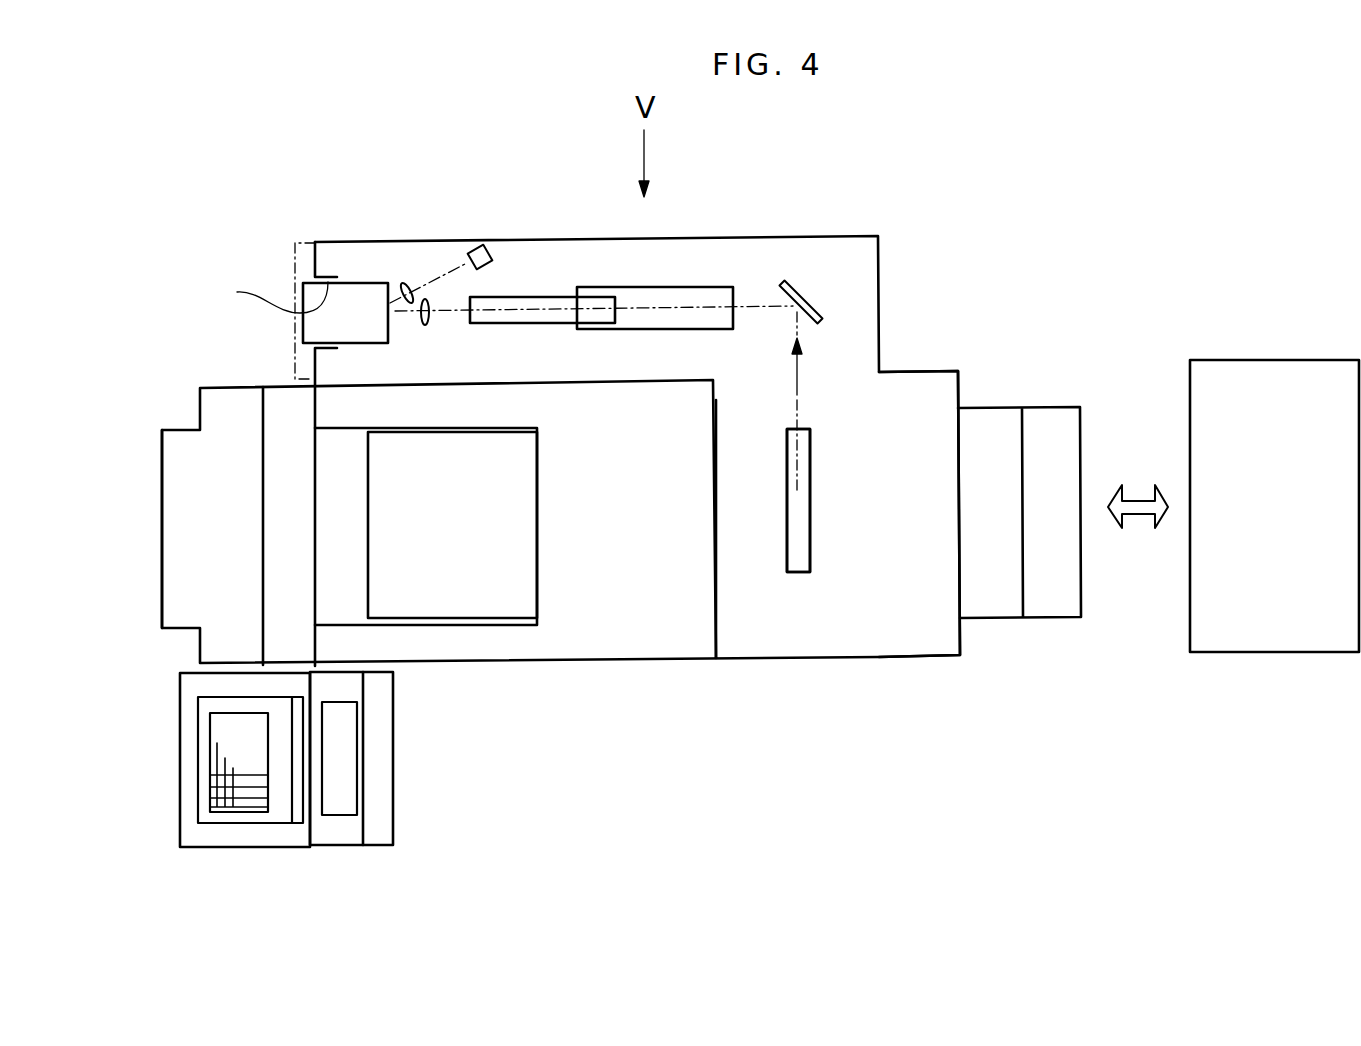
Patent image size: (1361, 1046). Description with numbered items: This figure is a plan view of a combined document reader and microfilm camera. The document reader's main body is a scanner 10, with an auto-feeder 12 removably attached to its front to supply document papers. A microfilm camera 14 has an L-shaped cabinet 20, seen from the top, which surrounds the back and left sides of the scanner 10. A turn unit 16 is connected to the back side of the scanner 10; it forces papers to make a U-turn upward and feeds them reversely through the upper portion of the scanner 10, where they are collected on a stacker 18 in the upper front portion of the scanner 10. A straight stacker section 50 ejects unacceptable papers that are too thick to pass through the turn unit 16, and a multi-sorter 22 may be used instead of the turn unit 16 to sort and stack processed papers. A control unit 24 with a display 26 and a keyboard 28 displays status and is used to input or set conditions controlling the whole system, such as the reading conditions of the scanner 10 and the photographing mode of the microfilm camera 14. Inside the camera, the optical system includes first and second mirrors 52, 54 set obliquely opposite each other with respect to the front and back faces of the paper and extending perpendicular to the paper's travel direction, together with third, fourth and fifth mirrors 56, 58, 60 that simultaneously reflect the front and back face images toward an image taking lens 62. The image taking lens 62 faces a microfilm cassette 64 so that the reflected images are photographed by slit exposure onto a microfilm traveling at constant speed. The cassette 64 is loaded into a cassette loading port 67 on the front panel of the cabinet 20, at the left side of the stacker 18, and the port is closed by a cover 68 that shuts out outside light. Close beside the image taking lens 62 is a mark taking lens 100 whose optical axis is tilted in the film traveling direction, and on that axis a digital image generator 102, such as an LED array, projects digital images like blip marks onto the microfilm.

The scanner 10 is at (620, 661).
The auto-feeder 12 is at (199, 397).
The microfilm camera 14 is at (820, 661).
The turn unit 16 is at (927, 658).
The stacker 18 is at (476, 590).
The cabinet 20 is at (879, 248).
The multi-sorter 22 is at (1263, 652).
The control unit 24 is at (395, 810).
The display 26 is at (350, 845).
The keyboard 28 is at (287, 847).
The straight stacker section 50 is at (1003, 618).
The first mirror 52 is at (785, 568).
The second mirror 54 is at (798, 500).
The third mirror 56 is at (817, 307).
The fourth mirror 58 is at (713, 285).
The fifth mirror 60 is at (544, 296).
The image taking lens 62 is at (430, 322).
The microfilm cassette 64 is at (353, 284).
The cassette loading port 67 is at (260, 292).
The cover 68 is at (293, 255).
The mark taking lens 100 is at (408, 283).
The digital image generator 102 is at (494, 249).